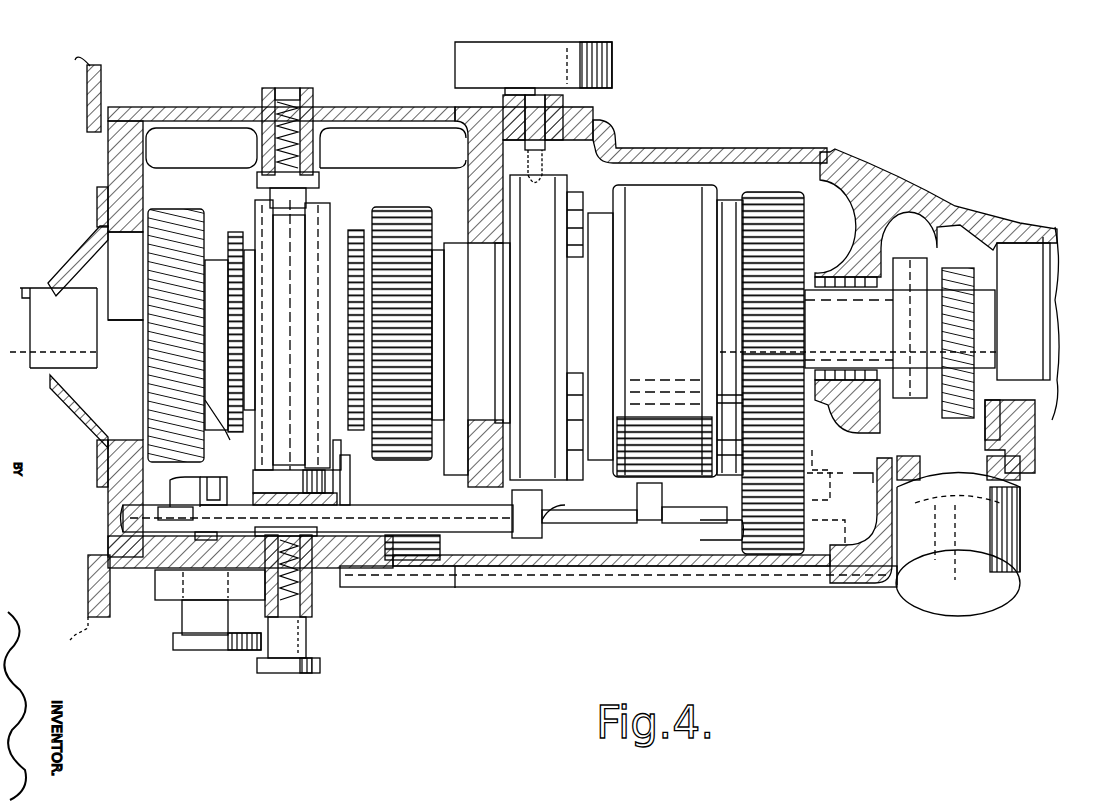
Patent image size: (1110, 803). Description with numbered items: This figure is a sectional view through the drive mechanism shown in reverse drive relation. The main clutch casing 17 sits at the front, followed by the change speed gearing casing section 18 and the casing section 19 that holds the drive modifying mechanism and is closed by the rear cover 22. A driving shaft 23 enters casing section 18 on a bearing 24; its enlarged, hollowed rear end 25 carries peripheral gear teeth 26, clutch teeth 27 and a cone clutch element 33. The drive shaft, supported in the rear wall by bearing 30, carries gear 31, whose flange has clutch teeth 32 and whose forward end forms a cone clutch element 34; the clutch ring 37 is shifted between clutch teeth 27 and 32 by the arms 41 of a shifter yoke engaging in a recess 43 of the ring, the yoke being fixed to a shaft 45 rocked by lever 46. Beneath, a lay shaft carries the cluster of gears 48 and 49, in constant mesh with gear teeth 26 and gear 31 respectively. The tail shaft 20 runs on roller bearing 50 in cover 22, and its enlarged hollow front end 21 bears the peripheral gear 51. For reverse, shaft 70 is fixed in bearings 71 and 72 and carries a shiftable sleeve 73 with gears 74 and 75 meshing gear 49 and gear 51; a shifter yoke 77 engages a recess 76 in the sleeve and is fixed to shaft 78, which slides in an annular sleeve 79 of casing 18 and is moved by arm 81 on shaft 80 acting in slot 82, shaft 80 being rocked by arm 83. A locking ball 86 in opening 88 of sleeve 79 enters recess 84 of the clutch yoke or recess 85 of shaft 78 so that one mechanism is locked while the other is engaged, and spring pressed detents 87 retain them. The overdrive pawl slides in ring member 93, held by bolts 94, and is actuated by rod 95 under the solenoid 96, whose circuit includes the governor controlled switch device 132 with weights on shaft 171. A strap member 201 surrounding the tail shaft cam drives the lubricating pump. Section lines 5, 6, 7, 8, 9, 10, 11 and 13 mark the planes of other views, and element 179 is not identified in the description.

The main clutch casing 17 is at (101, 80).
The change speed gearing casing section 18 is at (378, 110).
The casing section 19 is at (660, 148).
The tail shaft 20 is at (870, 314).
The enlarged hollow front end 21 is at (695, 188).
The rear cover 22 is at (905, 190).
The driving shaft 23 is at (35, 320).
The bearing 24 is at (118, 240).
The rear end 25 is at (216, 422).
The peripheral gear teeth 26 is at (215, 258).
The clutch teeth 27 is at (235, 232).
The bearing 30 is at (460, 252).
The gear 31 is at (412, 207).
The clutch teeth 32 is at (356, 230).
The cone clutch element 33 is at (250, 250).
The cone clutch element 34 is at (340, 450).
The clutch ring 37 is at (332, 205).
The arms 41 is at (318, 190).
The recess 43 is at (300, 262).
The shaft 45 is at (306, 628).
The lever 46 is at (316, 666).
The gear 48 is at (170, 208).
The gear 49 is at (440, 250).
The roller bearing 50 is at (834, 288).
The peripheral gear 51 is at (772, 192).
The shaft 70 is at (840, 497).
The bearing 71 is at (895, 446).
The bearing 72 is at (370, 575).
The sleeve 73 is at (640, 512).
The gear 74 is at (455, 590).
The gear 75 is at (742, 535).
The recess 76 is at (575, 523).
The shifter yoke 77 is at (540, 540).
The shaft 78 is at (455, 535).
The annular sleeve 79 is at (230, 477).
The shaft 80 is at (182, 614).
The arm 81 is at (165, 506).
The slot 82 is at (178, 495).
The arm 83 is at (173, 640).
The recess 84 is at (321, 478).
The recess 85 is at (206, 544).
The locking ball 86 is at (317, 518).
The spring pressed detents 87 is at (318, 172).
The opening 88 is at (347, 482).
The ring member 93 is at (520, 275).
The bolts 94 is at (583, 205).
The rod 95 is at (563, 103).
The solenoid 96 is at (614, 55).
The governor controlled switch device 132 is at (1012, 530).
The shaft 171 is at (996, 422).
The gear 179 is at (962, 275).
The strap member 201 is at (902, 270).
The section line 5- 5 is at (68, 508).
The section line 6- 6 is at (487, 318).
The section line 7- 7 is at (298, 58).
The section line 8- 8 is at (428, 330).
The section line 9- 9 is at (215, 472).
The section line 10- 10 is at (558, 47).
The section line 11- 11 is at (893, 236).
The section line 13- 13 is at (978, 247).